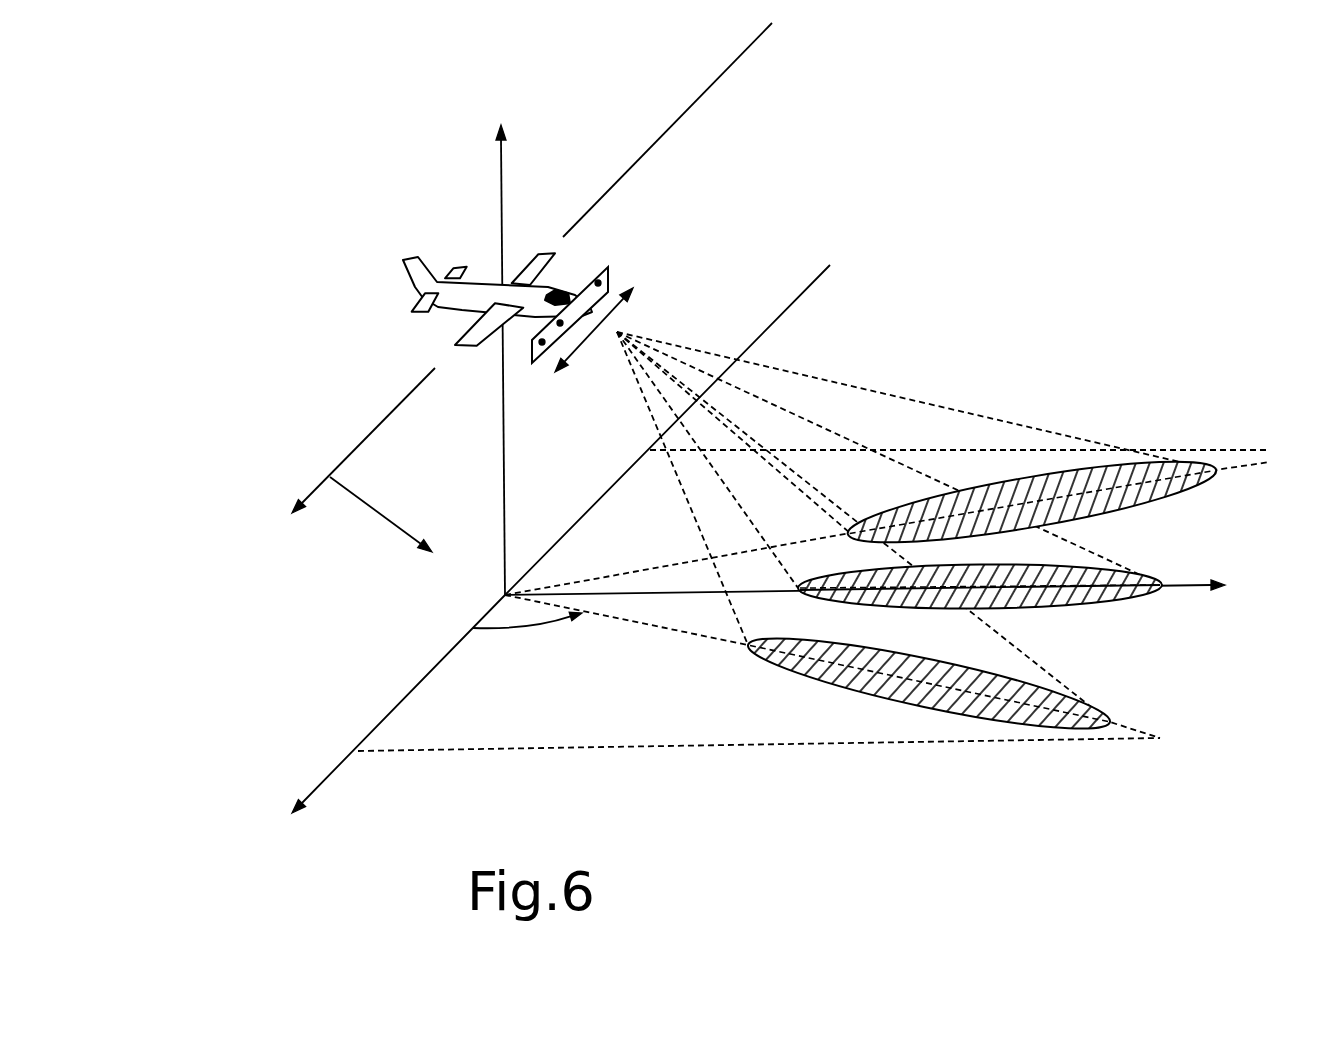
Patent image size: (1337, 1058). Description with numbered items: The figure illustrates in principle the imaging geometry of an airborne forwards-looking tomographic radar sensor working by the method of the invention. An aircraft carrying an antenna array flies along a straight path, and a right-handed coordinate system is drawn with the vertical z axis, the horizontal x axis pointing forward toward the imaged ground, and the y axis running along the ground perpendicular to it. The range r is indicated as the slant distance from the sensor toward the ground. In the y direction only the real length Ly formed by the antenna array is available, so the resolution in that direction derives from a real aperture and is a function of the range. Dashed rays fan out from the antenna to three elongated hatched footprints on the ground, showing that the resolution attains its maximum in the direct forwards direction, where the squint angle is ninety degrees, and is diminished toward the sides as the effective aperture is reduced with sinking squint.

The x direction x is at (865, 606).
The y direction y is at (549, 539).
The z direction z is at (512, 338).
The range r is at (391, 514).
The real length of the antenna array Ly is at (582, 339).